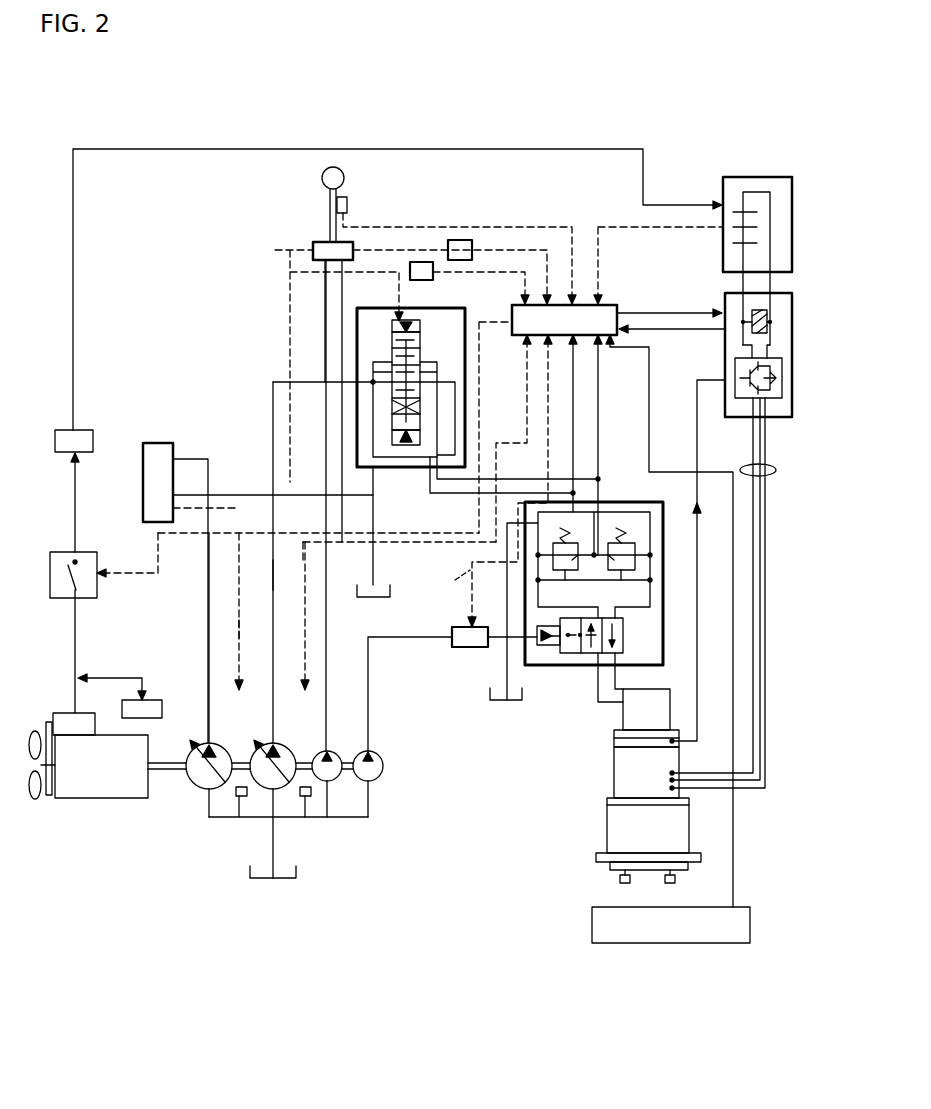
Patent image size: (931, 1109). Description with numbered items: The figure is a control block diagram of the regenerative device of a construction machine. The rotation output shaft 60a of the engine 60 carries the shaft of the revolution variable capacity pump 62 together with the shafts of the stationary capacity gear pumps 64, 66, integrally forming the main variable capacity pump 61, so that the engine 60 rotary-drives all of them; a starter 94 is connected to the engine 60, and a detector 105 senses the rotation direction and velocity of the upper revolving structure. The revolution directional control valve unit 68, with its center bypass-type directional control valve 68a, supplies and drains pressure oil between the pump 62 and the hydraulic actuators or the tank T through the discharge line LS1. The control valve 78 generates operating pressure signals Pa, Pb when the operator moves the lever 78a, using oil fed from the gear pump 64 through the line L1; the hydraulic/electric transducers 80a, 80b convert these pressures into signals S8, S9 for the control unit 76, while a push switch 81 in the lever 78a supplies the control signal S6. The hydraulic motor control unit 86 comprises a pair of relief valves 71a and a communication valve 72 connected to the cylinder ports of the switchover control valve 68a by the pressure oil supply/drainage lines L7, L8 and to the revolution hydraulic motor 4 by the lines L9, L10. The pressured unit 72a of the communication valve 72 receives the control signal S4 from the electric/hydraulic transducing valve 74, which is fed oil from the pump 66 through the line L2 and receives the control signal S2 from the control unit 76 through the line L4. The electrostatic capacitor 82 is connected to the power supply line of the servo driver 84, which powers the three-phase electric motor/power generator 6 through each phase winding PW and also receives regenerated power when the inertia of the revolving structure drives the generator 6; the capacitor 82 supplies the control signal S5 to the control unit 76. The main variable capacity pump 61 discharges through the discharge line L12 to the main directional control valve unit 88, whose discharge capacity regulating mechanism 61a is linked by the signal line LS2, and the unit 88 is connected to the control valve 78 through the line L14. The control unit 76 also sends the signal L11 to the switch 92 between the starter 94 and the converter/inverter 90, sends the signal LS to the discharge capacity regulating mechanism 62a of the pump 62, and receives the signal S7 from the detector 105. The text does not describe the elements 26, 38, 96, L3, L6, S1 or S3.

The revolution hydraulic motor 4 is at (620, 724).
The three-phase electric motor/power generator 6 is at (612, 775).
The hydraulic pump 26 is at (607, 838).
The coupling 38 is at (612, 745).
The engine 60 is at (118, 800).
The rotation output shaft 60a is at (165, 763).
The main variable capacity pump 61 is at (200, 786).
The discharge capacity regulating mechanism 61a is at (243, 818).
The variable capacity pump 62 is at (273, 742).
The discharge capacity regulating mechanism 62a is at (305, 817).
The stationary capacity gear pump 64 is at (338, 778).
The stationary capacity gear pump 66 is at (383, 771).
The revolution directional control valve unit 68 is at (394, 308).
The center bypass-type directional control valve 68a is at (420, 340).
The relief valve 71a is at (631, 543).
The communication valve 72 is at (620, 640).
The pressured unit 72a is at (548, 653).
The electric/hydraulic transducing valve 74 is at (466, 648).
The control unit 76 is at (617, 305).
The control valve 78 is at (313, 245).
The lever 78a is at (330, 202).
The hydraulic/electric transducer 80a is at (458, 240).
The hydraulic/electric transducer 80b is at (420, 262).
The push switch 81 is at (348, 205).
The electrostatic capacitor 82 is at (760, 177).
The servo driver 84 is at (778, 417).
The hydraulic motor control unit 86 is at (664, 652).
The main directional control valve unit 88 is at (157, 443).
The converter/inverter 90 is at (60, 430).
The switch 92 is at (62, 552).
The starter 94 is at (64, 713).
The sensor 96 is at (150, 702).
The detector 105 is at (592, 928).
The line L1 is at (326, 716).
The line L2 is at (368, 704).
The signal line L3 is at (697, 584).
The line L4 is at (451, 590).
The power line L6 is at (78, 252).
The pressure oil supply/drainage line L7 is at (600, 368).
The pressure oil supply/drainage line L8 is at (576, 397).
The line L9 is at (598, 680).
The line L10 is at (614, 712).
The signal L11 is at (382, 533).
The discharge line L12 is at (208, 481).
The line L14 is at (338, 308).
The signal LS is at (306, 636).
The discharge line LS1 is at (273, 605).
The signal line LS2 is at (239, 645).
The operating pressure signal Pa is at (459, 254).
The operating pressure signal Pb is at (394, 364).
The phase winding PW is at (774, 476).
The signal S1 is at (678, 313).
The control signal S2 is at (527, 370).
The signal S3 is at (700, 329).
The control signal S4 is at (548, 425).
The control signal S5 is at (640, 227).
The control signal S6 is at (562, 227).
The signal S7 is at (649, 465).
The signal S8 is at (518, 250).
The signal S9 is at (470, 272).
The tank T is at (300, 879).